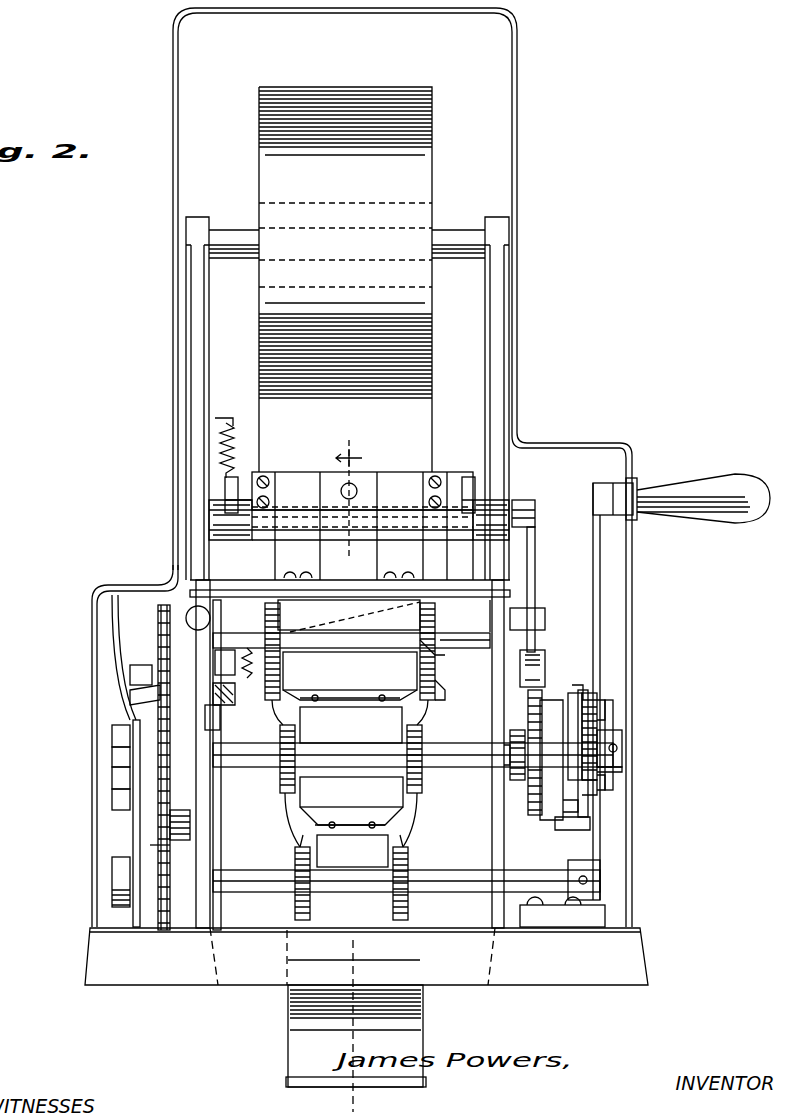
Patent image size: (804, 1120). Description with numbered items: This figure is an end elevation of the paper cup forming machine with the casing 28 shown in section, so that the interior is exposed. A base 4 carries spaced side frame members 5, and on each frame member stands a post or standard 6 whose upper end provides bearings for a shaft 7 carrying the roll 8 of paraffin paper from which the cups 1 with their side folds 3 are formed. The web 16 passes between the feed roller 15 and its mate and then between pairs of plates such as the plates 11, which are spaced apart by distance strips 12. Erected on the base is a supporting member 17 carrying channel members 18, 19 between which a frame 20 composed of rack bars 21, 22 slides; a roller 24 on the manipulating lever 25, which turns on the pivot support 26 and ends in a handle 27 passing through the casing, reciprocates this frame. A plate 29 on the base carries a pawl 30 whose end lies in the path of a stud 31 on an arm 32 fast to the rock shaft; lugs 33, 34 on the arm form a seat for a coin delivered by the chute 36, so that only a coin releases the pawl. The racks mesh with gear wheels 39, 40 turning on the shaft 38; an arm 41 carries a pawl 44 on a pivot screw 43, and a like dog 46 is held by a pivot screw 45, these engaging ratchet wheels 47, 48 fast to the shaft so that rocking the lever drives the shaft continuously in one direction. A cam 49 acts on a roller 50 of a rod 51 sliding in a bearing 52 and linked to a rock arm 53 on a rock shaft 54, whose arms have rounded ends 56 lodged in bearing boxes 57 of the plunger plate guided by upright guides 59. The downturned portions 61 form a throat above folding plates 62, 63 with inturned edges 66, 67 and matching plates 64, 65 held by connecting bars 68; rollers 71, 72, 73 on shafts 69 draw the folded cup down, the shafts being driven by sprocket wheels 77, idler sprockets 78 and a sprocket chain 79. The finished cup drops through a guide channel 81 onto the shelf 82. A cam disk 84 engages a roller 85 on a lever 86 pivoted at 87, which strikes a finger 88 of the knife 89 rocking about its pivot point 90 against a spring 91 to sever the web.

The cup 1 is at (362, 527).
The side fold 3 is at (349, 491).
The base 4 is at (105, 980).
The side frame member 5 is at (494, 913).
The post or standard 6 is at (209, 352).
The shaft 7 is at (459, 232).
The roll of paraffin paper 8 is at (345, 279).
The pair of plates 11 is at (463, 545).
The distance strip 12 is at (195, 593).
The roller 15 is at (440, 690).
The web of paper 16 is at (260, 443).
The supporting member 17 is at (546, 924).
The channel member 18 is at (586, 822).
The channel member 19 is at (578, 690).
The frame 20 is at (585, 712).
The rack bar 21 is at (583, 706).
The rack bar 22 is at (590, 806).
The roller 24 is at (592, 776).
The manipulating lever 25 is at (598, 585).
The pivot support 26 is at (468, 876).
The handle 27 is at (745, 512).
The casing 28 is at (519, 338).
The plate 29 is at (134, 830).
The pawl 30 is at (120, 748).
The stud or boss 31 is at (120, 789).
The arm 32 is at (130, 845).
The lug 33 is at (124, 801).
The lug 34 is at (124, 765).
The chute 36 is at (116, 702).
The shaft 38 is at (456, 745).
The gear wheel 39 is at (566, 816).
The gear wheel 40 is at (592, 790).
The arm 41 is at (568, 732).
The pivot screw 43 is at (550, 710).
The pawl 44 is at (530, 770).
The pivot screw 45 is at (614, 706).
The pawl or dog 46 is at (606, 722).
The ratchet wheel 47 is at (545, 815).
The ratchet wheel 48 is at (592, 760).
The cam 49 is at (535, 792).
The roller 50 is at (536, 676).
The rod 51 is at (536, 583).
The bearing 52 is at (530, 620).
The rock arm 53 is at (540, 520).
The rock shaft 54 is at (456, 508).
The rounded end 56 is at (262, 478).
The bearing box 57 is at (226, 488).
The upright guide 59 is at (349, 560).
The downturned portion 61 is at (351, 624).
The plate 62 is at (350, 675).
The plate 63 is at (366, 776).
The matching plate 64 is at (283, 672).
The matching plate 65 is at (351, 792).
The inturned side edge 66 is at (281, 722).
The inturned side edge 67 is at (300, 850).
The connecting bar 68 is at (351, 781).
The shaft 69 is at (474, 763).
The roller 71 is at (424, 652).
The roller 72 is at (409, 740).
The roller 73 is at (392, 905).
The sprocket wheel 77 is at (432, 655).
The idler sprocket wheel 78 is at (173, 833).
The sprocket chain 79 is at (158, 846).
The guide channel 81 is at (293, 958).
The shelf 82 is at (356, 1026).
The cam disk 84 is at (212, 830).
The roller 85 is at (160, 698).
The lever 86 is at (211, 710).
The pivot 87 is at (216, 700).
The finger 88 is at (130, 675).
The knife 89 is at (355, 617).
The pivot point 90 is at (211, 618).
The spring 91 is at (222, 660).